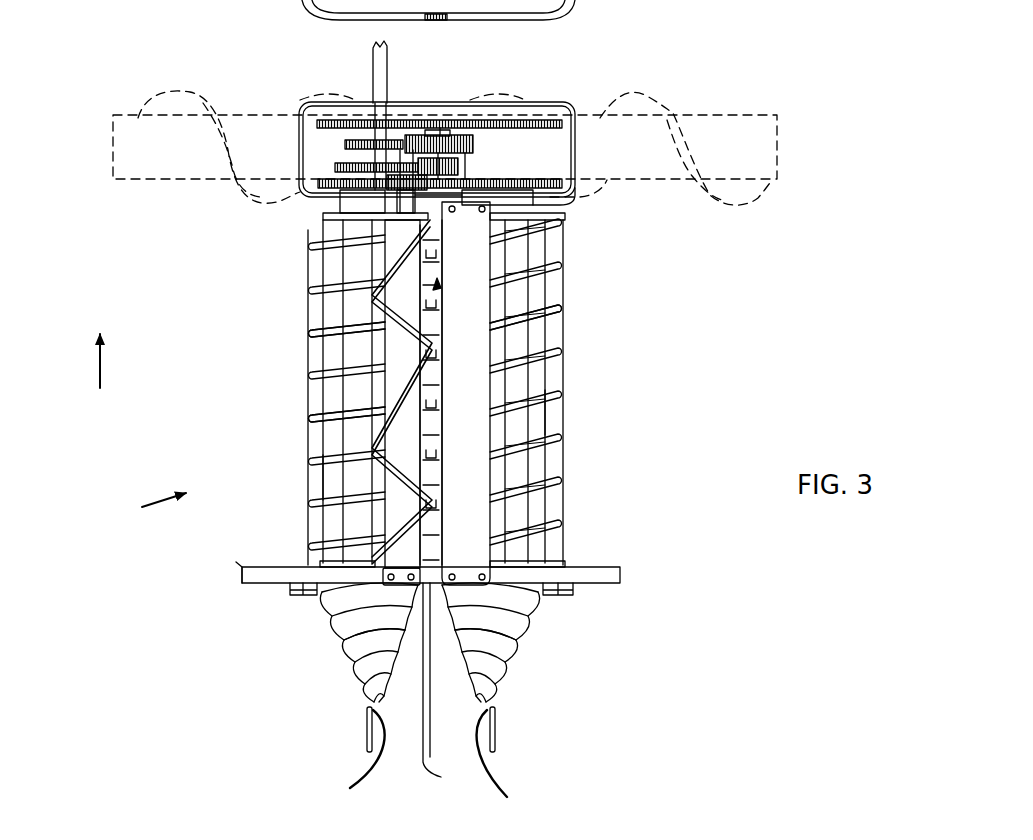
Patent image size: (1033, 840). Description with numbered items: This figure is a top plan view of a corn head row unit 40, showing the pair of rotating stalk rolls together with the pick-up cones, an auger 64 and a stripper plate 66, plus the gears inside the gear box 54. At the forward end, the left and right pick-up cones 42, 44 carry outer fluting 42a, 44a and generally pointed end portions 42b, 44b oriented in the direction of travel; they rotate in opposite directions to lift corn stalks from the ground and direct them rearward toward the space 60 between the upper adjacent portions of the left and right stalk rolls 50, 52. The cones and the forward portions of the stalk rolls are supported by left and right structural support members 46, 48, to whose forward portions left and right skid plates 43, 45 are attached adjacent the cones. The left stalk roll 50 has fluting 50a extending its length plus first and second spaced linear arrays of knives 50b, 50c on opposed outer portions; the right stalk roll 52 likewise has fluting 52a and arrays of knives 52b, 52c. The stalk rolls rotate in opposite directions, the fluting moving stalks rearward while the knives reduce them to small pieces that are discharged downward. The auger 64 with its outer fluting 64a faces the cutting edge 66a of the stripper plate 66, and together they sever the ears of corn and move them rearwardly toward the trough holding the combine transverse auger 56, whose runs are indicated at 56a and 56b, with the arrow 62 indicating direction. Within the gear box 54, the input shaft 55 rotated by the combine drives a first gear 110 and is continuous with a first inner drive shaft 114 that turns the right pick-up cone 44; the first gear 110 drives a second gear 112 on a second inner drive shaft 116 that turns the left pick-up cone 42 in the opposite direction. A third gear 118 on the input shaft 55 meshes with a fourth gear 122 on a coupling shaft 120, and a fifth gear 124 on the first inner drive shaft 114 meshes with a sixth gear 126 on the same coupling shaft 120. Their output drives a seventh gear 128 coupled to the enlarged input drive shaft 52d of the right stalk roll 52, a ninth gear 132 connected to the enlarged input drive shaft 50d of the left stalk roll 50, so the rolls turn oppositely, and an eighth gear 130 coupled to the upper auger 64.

The row unit 40 is at (149, 506).
The left pick-up cone 42 is at (525, 680).
The outer fluting 42a is at (510, 655).
The pointed end portion 42b is at (506, 768).
The left skid plate 43 is at (497, 738).
The right pick-up cone 44 is at (324, 617).
The outer fluting 44a is at (362, 632).
The pointed end portion 44b is at (344, 758).
The right skid plate 45 is at (363, 737).
The left structural support member 46 is at (614, 572).
The right structural support member 48 is at (250, 572).
The left stalk roll 50 is at (535, 377).
The fluting 50a is at (545, 308).
The first linear array of knives 50b is at (557, 413).
The second linear array of knives 50c is at (443, 480).
The enlarged input drive shaft 50d is at (523, 205).
The right stalk roll 52 is at (338, 392).
The fluting 52a is at (322, 333).
The first array of knives 52b is at (325, 478).
The second array of knives 52c is at (380, 445).
The enlarged input drive shaft 52d is at (350, 203).
The gear box 54 is at (565, 104).
The input shaft 55 is at (378, 72).
The combine transverse auger 56 is at (776, 112).
The belt run 56a is at (673, 113).
The belt run 56b is at (162, 95).
The space 60 is at (443, 694).
The direction of travel 62 is at (100, 360).
The auger 64 is at (388, 497).
The outer fluting 64a is at (373, 555).
The stripper plate 66 is at (477, 347).
The cutting edge 66a is at (443, 300).
The first gear 110 is at (336, 121).
The second gear 112 is at (508, 182).
The first inner drive shaft 114 is at (376, 136).
The second inner drive shaft 116 is at (500, 152).
The third gear 118 is at (393, 147).
The coupling shaft 120 is at (437, 140).
The fourth gear 122 is at (458, 134).
The fifth gear 124 is at (338, 161).
The sixth gear 126 is at (490, 182).
The seventh gear 128 is at (323, 186).
The eighth gear 130 is at (380, 188).
The ninth gear 132 is at (562, 184).